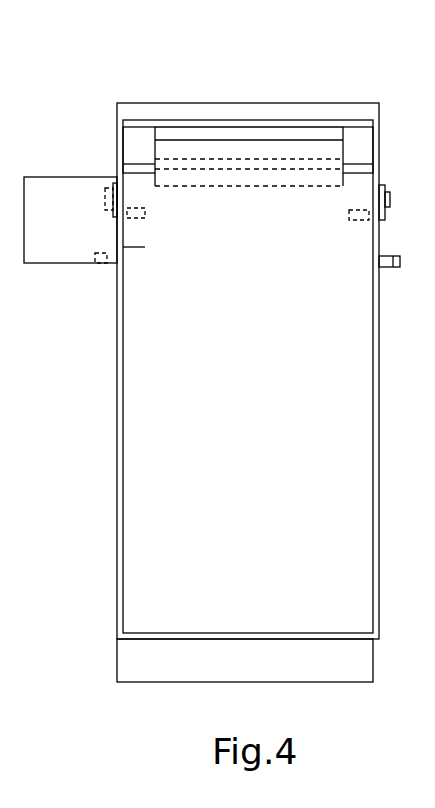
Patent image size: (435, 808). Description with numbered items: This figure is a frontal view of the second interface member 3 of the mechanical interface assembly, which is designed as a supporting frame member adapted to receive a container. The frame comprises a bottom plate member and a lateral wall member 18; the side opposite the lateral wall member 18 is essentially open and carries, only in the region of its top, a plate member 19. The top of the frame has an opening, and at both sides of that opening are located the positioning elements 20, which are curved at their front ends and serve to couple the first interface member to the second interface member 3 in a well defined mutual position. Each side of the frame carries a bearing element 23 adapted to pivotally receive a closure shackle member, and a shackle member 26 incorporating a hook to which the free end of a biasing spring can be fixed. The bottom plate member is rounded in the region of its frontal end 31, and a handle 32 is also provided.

The second interface member 3 is at (250, 68).
The lateral wall member 18 is at (376, 379).
The plate member 19 is at (138, 247).
The positioning elements 20 is at (141, 142).
The bearing element 23 is at (390, 199).
The shackle member 26 is at (384, 268).
The frontal end 31 is at (195, 662).
The handle 32 is at (62, 240).